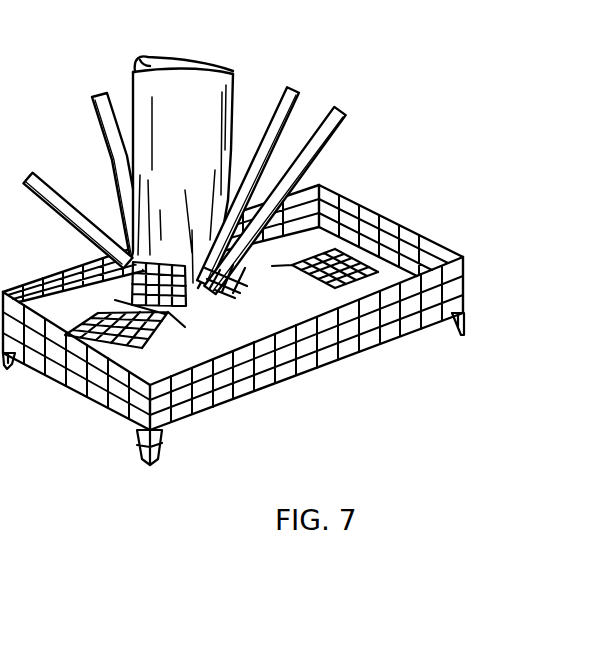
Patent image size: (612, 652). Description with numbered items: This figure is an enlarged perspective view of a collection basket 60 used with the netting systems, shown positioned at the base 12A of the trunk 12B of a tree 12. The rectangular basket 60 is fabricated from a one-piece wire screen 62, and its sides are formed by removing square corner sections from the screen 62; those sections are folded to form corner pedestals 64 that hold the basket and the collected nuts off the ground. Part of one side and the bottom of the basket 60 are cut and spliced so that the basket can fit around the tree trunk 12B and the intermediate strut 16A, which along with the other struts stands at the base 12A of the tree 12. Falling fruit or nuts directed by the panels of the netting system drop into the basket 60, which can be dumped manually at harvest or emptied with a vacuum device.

The tree 12 is at (194, 150).
The base of the trunk 12A is at (200, 292).
The trunk 12B is at (232, 75).
The intermediate strut 16A is at (322, 148).
The collection basket 60 is at (233, 307).
The wire screen 62 is at (252, 384).
The corner pedestals 64 is at (162, 457).